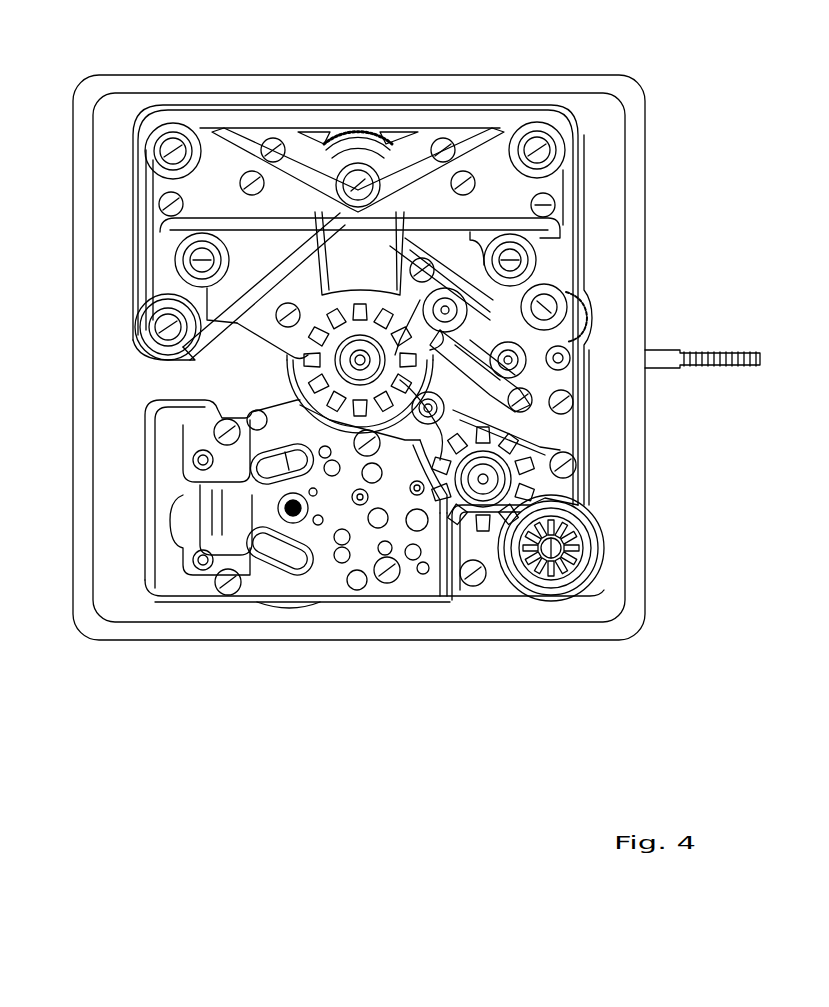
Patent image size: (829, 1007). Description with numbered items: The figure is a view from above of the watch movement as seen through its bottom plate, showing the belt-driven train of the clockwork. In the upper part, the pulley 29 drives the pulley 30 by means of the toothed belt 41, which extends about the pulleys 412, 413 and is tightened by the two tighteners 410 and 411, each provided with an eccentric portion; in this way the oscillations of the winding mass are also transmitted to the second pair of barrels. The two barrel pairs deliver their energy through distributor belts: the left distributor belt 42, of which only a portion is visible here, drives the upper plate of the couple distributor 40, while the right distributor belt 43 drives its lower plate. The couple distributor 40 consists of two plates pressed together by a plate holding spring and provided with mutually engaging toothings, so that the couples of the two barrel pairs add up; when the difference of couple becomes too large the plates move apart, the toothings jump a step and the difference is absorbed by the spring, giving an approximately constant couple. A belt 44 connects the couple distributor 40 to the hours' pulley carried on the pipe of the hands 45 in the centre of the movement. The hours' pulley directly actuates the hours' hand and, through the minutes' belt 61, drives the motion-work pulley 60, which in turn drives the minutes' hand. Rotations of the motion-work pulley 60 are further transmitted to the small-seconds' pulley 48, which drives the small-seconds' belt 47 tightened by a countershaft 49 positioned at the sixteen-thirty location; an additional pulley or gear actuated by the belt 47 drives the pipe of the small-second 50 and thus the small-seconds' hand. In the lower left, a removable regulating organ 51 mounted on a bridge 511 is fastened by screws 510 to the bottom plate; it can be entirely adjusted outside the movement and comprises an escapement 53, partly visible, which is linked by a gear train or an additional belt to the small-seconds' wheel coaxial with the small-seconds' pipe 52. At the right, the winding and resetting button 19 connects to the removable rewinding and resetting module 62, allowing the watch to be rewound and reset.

The winding and resetting button 19 is at (753, 370).
The pulley 29 is at (148, 337).
The pulley 30 is at (560, 300).
The couple distributor 40 is at (356, 135).
The toothed belt 41 is at (446, 118).
The left distributor belt 42 is at (327, 260).
The right distributor belt 43 is at (392, 245).
The belt 44 is at (330, 290).
The pipe of the hands 45 is at (352, 358).
The small-seconds' belt 47 is at (500, 417).
The small-seconds' pulley 48 is at (490, 425).
The countershaft 49 is at (588, 543).
The pipe of the small-second 50 is at (497, 578).
The removable regulating organ 51 is at (332, 580).
The small-seconds' pipe 52 is at (505, 483).
The escapement 53 is at (410, 458).
The motion-work pulley 60 is at (590, 315).
The minutes' belt 61 is at (556, 346).
The removable rewinding and resetting module 62 is at (557, 380).
The tightener 410 is at (185, 267).
The tightener 411 is at (520, 263).
The pulley 412 is at (150, 148).
The pulley 413 is at (540, 140).
The screws 510 is at (212, 424).
The bridge 511 is at (282, 580).